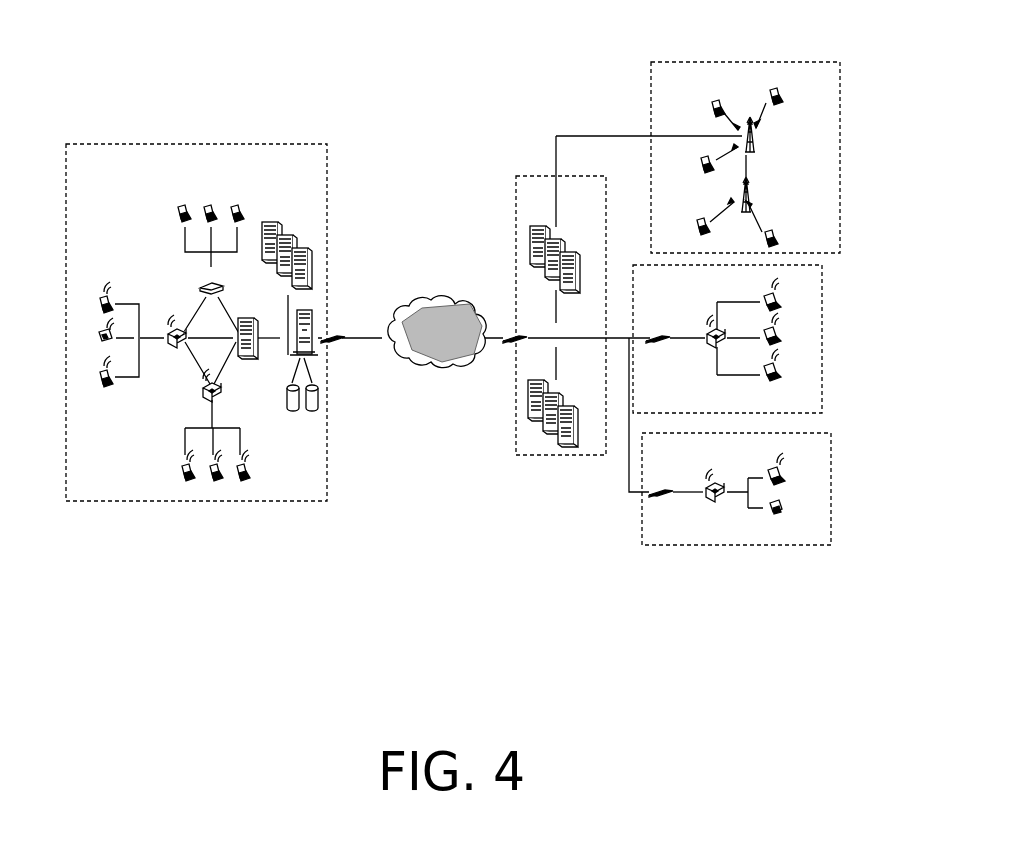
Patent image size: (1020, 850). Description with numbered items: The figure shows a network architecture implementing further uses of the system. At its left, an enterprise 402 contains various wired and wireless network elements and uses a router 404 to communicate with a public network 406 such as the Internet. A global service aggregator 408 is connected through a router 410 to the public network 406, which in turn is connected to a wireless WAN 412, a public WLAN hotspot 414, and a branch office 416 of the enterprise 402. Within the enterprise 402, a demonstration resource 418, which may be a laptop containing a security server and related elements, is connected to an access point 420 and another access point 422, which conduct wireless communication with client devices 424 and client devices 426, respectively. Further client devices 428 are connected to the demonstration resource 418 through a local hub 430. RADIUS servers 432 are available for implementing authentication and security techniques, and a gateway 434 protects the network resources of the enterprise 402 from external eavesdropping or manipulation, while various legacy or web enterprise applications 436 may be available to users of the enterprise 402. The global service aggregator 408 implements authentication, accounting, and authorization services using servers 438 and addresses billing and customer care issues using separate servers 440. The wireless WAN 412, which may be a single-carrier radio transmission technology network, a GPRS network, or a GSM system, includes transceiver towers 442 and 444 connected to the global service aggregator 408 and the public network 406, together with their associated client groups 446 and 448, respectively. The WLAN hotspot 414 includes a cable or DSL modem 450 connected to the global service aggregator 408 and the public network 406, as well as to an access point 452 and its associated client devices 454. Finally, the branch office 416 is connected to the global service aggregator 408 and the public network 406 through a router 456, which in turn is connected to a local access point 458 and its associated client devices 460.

The enterprise 402 is at (195, 144).
The router 404 is at (333, 330).
The public network 406 is at (433, 304).
The global service aggregator 408 is at (514, 178).
The router 410 is at (510, 347).
The wireless WAN 412 is at (840, 157).
The public WLAN hotspot 414 is at (823, 397).
The branch office 416 is at (832, 540).
The demonstration resource 418 is at (238, 358).
The access point 420 is at (170, 308).
The access point 422 is at (201, 385).
The client devices 424 is at (81, 307).
The client devices 426 is at (166, 457).
The client devices 428 is at (167, 226).
The local hub 430 is at (218, 275).
The RADIUS servers 432 is at (300, 238).
The gateway 434 is at (307, 310).
The enterprise applications 436 is at (314, 426).
The servers 438 is at (528, 241).
The servers 440 is at (545, 425).
The transceiver tower 442 is at (758, 142).
The transceiver tower 444 is at (753, 184).
The client group 446 is at (738, 83).
The client group 448 is at (790, 220).
The cable or DSL modem 450 is at (650, 328).
The access point 452 is at (700, 350).
The client devices 454 is at (807, 328).
The router 456 is at (660, 502).
The local access point 458 is at (703, 500).
The client devices 460 is at (795, 485).